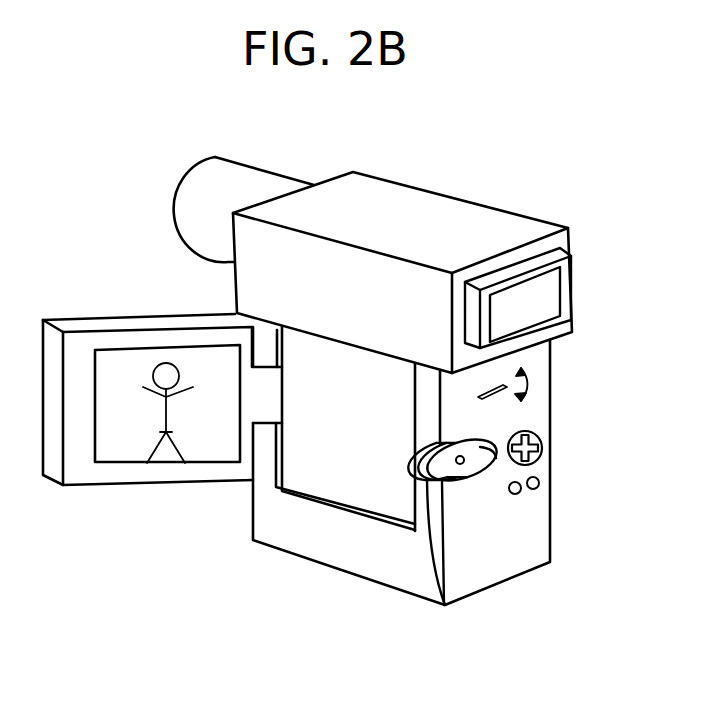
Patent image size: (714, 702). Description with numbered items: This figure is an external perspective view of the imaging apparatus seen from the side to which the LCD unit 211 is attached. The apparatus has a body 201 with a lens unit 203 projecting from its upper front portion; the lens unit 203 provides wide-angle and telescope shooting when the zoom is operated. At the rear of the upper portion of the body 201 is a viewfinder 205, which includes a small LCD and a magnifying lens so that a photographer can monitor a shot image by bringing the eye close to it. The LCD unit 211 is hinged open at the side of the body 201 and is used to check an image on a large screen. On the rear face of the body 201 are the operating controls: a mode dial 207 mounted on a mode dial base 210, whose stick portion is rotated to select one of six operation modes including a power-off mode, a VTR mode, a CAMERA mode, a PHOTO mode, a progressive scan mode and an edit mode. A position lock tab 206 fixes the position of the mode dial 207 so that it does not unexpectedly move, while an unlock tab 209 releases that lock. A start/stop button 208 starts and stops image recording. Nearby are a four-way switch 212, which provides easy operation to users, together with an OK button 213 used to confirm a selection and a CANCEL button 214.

The body 201 is at (412, 196).
The lens unit 203 is at (247, 171).
The viewfinder 205 is at (547, 297).
The position lock tab 206 is at (505, 387).
The mode dial 207 is at (450, 473).
The start/stop button 208 is at (473, 461).
The unlock tab 209 is at (493, 456).
The mode dial base 210 is at (424, 481).
The LCD unit 211 is at (122, 453).
The four-way switch 212 is at (538, 437).
The OK button 213 is at (520, 494).
The CANCEL button 214 is at (540, 483).